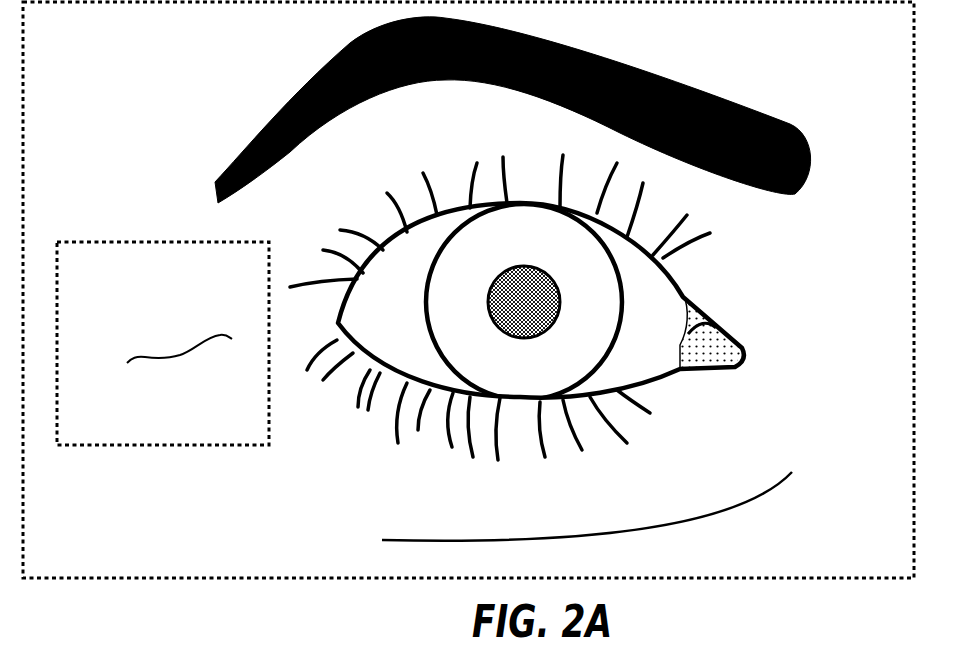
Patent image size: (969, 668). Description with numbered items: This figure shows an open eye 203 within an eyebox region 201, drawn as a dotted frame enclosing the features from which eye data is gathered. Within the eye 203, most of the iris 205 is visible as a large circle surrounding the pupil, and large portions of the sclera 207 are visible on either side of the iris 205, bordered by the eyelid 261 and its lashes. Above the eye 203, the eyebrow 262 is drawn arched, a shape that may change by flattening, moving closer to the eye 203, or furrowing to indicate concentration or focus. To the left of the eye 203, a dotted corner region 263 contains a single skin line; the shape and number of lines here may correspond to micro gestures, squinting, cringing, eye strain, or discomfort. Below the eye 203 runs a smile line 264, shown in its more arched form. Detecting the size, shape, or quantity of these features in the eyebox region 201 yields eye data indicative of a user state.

The eyebox region 201 is at (153, 578).
The eye 203 is at (559, 287).
The iris 205 is at (546, 376).
The sclera 207 is at (417, 334).
The eyelid 261 is at (454, 210).
The eyebrow 262 is at (760, 107).
The corner region 263 is at (185, 242).
The smile line 264 is at (760, 520).